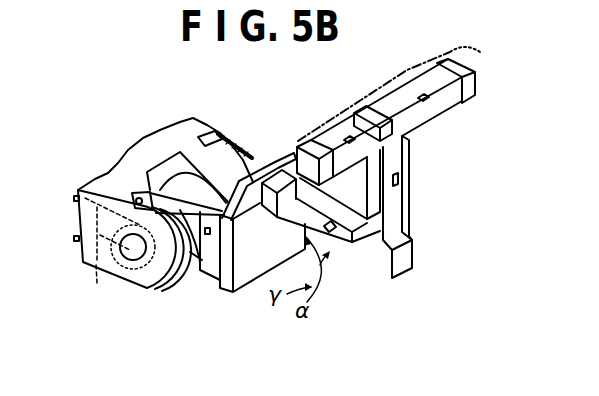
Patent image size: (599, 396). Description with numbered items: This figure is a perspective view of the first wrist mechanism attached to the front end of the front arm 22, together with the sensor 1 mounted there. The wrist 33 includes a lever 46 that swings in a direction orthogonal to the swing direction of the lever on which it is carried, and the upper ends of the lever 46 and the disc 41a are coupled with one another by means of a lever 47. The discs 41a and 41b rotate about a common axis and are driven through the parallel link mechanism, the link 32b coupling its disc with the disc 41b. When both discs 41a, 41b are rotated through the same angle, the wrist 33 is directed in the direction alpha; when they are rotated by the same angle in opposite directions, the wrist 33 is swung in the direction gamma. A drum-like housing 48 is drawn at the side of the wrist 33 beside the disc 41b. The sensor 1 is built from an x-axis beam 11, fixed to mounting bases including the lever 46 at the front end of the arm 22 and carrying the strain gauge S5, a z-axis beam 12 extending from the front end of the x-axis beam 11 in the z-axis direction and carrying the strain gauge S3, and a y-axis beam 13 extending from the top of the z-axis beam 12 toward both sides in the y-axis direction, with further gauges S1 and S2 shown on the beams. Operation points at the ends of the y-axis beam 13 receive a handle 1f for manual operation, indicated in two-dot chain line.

The sensor 1 is at (391, 77).
The handle 1f is at (461, 54).
The x-axis beam 11 is at (344, 240).
The z-axis beam 12 is at (401, 208).
The y-axis beam 13 is at (358, 127).
The front arm 22 is at (193, 126).
The link 32b is at (74, 286).
The wrist 33 is at (222, 297).
The disc 41a is at (218, 140).
The disc 41b is at (104, 175).
The lever 46 is at (243, 267).
The lever 47 is at (245, 155).
The drum 48 is at (185, 268).
The hole S1 is at (349, 137).
The hole S2 is at (423, 92).
The strain gauge S3 is at (400, 175).
The strain gauge S5 is at (332, 221).